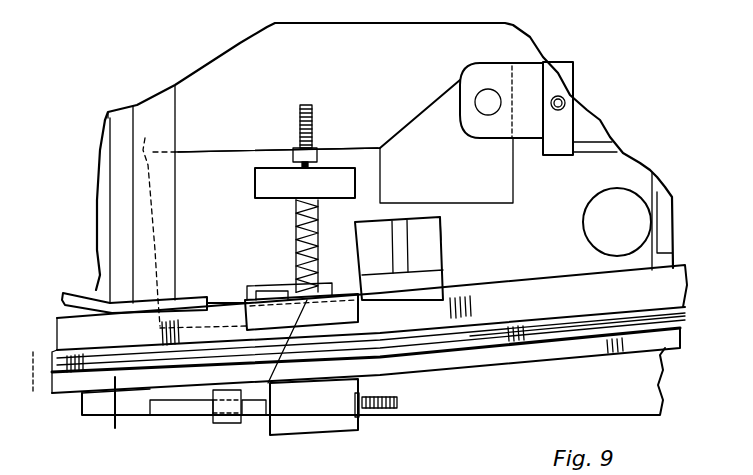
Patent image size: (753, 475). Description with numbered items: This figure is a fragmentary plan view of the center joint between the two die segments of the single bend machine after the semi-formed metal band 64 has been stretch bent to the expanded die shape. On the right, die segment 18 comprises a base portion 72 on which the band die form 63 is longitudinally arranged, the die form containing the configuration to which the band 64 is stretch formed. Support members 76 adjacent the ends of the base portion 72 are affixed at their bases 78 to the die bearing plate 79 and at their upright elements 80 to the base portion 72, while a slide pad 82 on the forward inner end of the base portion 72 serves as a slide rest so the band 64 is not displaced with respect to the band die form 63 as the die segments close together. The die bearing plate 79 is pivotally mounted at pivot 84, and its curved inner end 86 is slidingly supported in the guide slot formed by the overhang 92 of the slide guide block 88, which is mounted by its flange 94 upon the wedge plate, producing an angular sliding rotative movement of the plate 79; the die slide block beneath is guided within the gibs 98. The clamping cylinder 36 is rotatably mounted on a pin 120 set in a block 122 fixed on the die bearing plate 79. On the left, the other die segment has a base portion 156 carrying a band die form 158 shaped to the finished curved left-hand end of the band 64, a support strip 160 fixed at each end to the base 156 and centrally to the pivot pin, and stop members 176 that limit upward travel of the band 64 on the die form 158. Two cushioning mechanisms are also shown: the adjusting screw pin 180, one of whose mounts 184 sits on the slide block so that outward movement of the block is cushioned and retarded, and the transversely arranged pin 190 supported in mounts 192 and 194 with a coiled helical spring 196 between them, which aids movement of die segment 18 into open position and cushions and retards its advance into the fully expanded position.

The die segment 18 is at (529, 376).
The clamping cylinder 36 is at (559, 73).
The band die form 63 is at (462, 348).
The metal band 64 is at (85, 383).
The base portion 72 is at (502, 294).
The support members 76 is at (452, 250).
The bases 78 is at (439, 228).
The die bearing plate 79 is at (223, 158).
The upright elements 80 is at (445, 280).
The slide pad 82 is at (332, 430).
The pivot 84 is at (584, 225).
The inner end 86 is at (246, 224).
The slide guide block 88 is at (359, 414).
The overhang 92 is at (168, 98).
The flange 94 is at (120, 116).
The gibs 98 is at (503, 415).
The pin 120 is at (487, 92).
The block 122 is at (428, 114).
The base portion 156 is at (64, 338).
The band die form 158 is at (164, 412).
The support strip 160 is at (70, 293).
The stop members 176 is at (356, 313).
The adjusting screw pin 180 is at (255, 415).
The mount 184 is at (222, 423).
The pin 190 is at (310, 118).
The mount 192 is at (266, 292).
The mount 194 is at (268, 185).
The coiled helical spring 196 is at (314, 226).